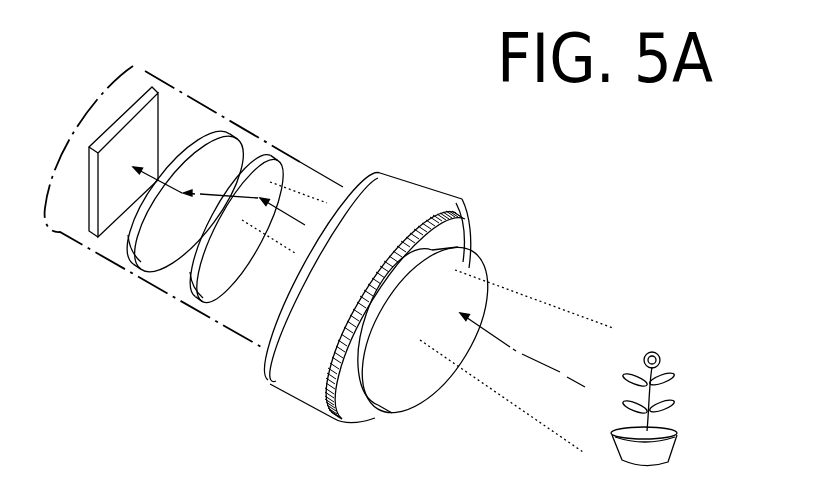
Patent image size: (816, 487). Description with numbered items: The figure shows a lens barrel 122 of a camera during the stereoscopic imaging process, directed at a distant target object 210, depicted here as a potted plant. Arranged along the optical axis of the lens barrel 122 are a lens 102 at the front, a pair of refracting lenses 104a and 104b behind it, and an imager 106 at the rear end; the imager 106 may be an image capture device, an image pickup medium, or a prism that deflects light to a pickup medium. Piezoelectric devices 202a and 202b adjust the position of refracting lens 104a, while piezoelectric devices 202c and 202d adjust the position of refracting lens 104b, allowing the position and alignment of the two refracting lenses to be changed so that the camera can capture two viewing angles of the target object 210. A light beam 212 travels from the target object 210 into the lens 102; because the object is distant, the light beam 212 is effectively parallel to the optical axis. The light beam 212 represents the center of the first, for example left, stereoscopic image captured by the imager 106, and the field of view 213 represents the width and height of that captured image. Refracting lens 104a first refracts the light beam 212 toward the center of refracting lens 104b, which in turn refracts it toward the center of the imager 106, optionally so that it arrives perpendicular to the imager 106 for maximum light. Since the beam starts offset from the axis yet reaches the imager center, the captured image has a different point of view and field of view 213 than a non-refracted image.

The lens 102 is at (441, 172).
The refracting lens 104a is at (203, 303).
The refracting lens 104b is at (140, 260).
The imager 106 is at (142, 102).
The lens barrel 122 is at (330, 178).
The piezoelectric device 202a is at (177, 278).
The piezoelectric device 202b is at (250, 145).
The piezoelectric device 202c is at (118, 245).
The piezoelectric device 202d is at (199, 119).
The target object 210 is at (672, 340).
The light beam 212 is at (523, 353).
The field of view 213 is at (547, 423).